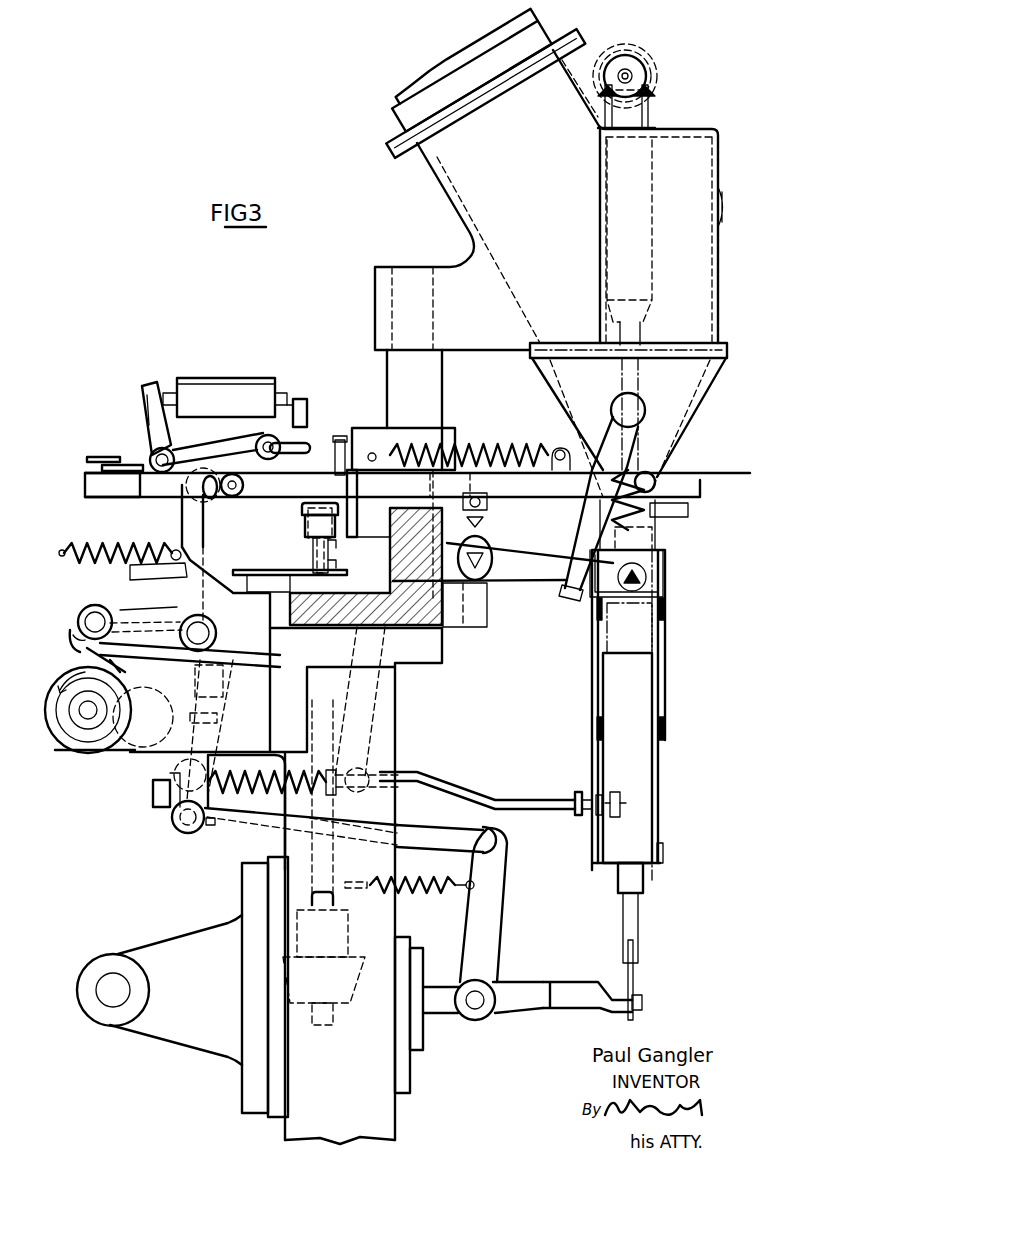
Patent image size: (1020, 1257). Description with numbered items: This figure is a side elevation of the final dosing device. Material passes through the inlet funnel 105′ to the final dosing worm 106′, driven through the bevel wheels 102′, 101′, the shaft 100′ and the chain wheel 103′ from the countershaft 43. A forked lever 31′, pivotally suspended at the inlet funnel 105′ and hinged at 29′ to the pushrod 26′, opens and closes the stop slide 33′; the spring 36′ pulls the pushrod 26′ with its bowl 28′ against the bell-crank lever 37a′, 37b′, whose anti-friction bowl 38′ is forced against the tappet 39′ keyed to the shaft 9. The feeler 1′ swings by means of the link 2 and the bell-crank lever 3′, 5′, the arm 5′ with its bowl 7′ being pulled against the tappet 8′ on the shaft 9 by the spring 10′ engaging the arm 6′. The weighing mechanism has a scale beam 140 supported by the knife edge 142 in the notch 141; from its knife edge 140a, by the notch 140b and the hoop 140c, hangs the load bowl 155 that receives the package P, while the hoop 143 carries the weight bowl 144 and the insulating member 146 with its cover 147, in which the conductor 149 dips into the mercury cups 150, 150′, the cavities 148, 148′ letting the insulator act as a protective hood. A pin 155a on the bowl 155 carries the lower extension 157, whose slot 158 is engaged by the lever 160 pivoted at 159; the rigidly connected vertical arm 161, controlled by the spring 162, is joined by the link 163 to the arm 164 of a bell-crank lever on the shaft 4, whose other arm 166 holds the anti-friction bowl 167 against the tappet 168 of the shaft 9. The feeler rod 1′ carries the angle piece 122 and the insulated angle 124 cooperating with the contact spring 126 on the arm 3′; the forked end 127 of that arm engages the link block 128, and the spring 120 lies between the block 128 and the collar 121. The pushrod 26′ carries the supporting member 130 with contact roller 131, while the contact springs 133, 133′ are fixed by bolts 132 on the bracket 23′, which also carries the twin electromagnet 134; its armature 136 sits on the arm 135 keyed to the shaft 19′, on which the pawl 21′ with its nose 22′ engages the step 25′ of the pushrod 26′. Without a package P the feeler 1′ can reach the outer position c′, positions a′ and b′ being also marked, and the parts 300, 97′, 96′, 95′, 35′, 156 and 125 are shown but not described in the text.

The magazine 300 is at (452, 196).
The shaft 100′ is at (633, 62).
The chain wheel 103′ is at (657, 68).
The bevel wheel 101′ is at (648, 80).
The bevel wheel 102′ is at (650, 112).
The hopper 97′ is at (707, 290).
The frame 96′ is at (435, 378).
The block 95′ is at (448, 427).
The spring 36′ is at (485, 430).
The bracket 35′ is at (558, 452).
The forked lever 31′ is at (608, 430).
The inlet funnel 105′ is at (700, 400).
The hinge point 29′ is at (656, 480).
The final dosing worm 106′ is at (648, 512).
The knife edge 142 is at (488, 546).
The notch 141 is at (492, 568).
The scale beam 140 is at (510, 583).
The knife edge 140a is at (667, 585).
The notch 140b is at (640, 563).
The hoop 140c is at (592, 675).
The stop slide 33′ is at (628, 595).
The housing 156 is at (667, 635).
The link 2 is at (396, 727).
The rod end a′ is at (578, 792).
The stop b′ is at (601, 796).
The outer position c′ is at (622, 796).
The package P is at (645, 802).
The feeler 1′ is at (525, 803).
The link 163 is at (415, 832).
The load bowl 155 is at (612, 865).
The pin 155a is at (632, 907).
The lower extension 157 is at (635, 970).
The slot 158 is at (635, 1010).
The lever 160 is at (613, 1002).
The pivot 159 is at (475, 1000).
The vertical arm 161 is at (493, 917).
The spring 162 is at (415, 893).
The weight bowl 144 is at (358, 957).
The countershaft 43 is at (113, 1000).
The spring 120 is at (277, 788).
The angle 124 is at (210, 828).
The angle piece 122 is at (157, 793).
The link block 128 is at (208, 797).
The lower forked end 127 is at (210, 762).
The collar 121 is at (345, 787).
The bell-crank lever arm 3′ is at (215, 737).
The contact spring 126 is at (220, 712).
The slide 125 is at (218, 672).
The arm 164 is at (133, 695).
The shaft 9 is at (90, 706).
The tappet 168 is at (83, 643).
The arm 5′ is at (137, 655).
The tappet 8′ is at (123, 648).
The tappet 39′ is at (73, 635).
The bowl 7′ is at (77, 617).
The anti-friction bowl 38′ is at (95, 605).
The anti-friction bowl 167 is at (110, 607).
The bell-crank lever arm 37a′ is at (185, 575).
The bell-crank lever arm 37b′ is at (183, 583).
The arm 166 is at (230, 580).
The shaft 4 is at (198, 633).
The arm 6′ is at (200, 520).
The spring 10′ is at (113, 547).
The pushrod 26′ is at (272, 488).
The cavity 148 is at (302, 522).
The cavity 148′ is at (300, 537).
The conductor 149 is at (307, 547).
The mercury cup 150 is at (338, 543).
The mercury cup 150′ is at (340, 563).
The hoop 143 is at (345, 573).
The insulating member 146 is at (333, 523).
The cover 147 is at (352, 497).
The supporting member 130 is at (332, 463).
The contact roller 131 is at (347, 438).
The contact spring 133 is at (293, 443).
The contact spring 133′ is at (302, 425).
The bolt 132 is at (268, 442).
The bracket 23′ is at (215, 450).
The bowl 28′ is at (242, 470).
The shaft 19′ is at (175, 460).
The arm 135 is at (147, 423).
The armature 136 is at (152, 382).
The twin electromagnet 134 is at (217, 383).
The pawl 21′ is at (127, 447).
The nose 22′ is at (87, 458).
The step 25′ is at (87, 475).